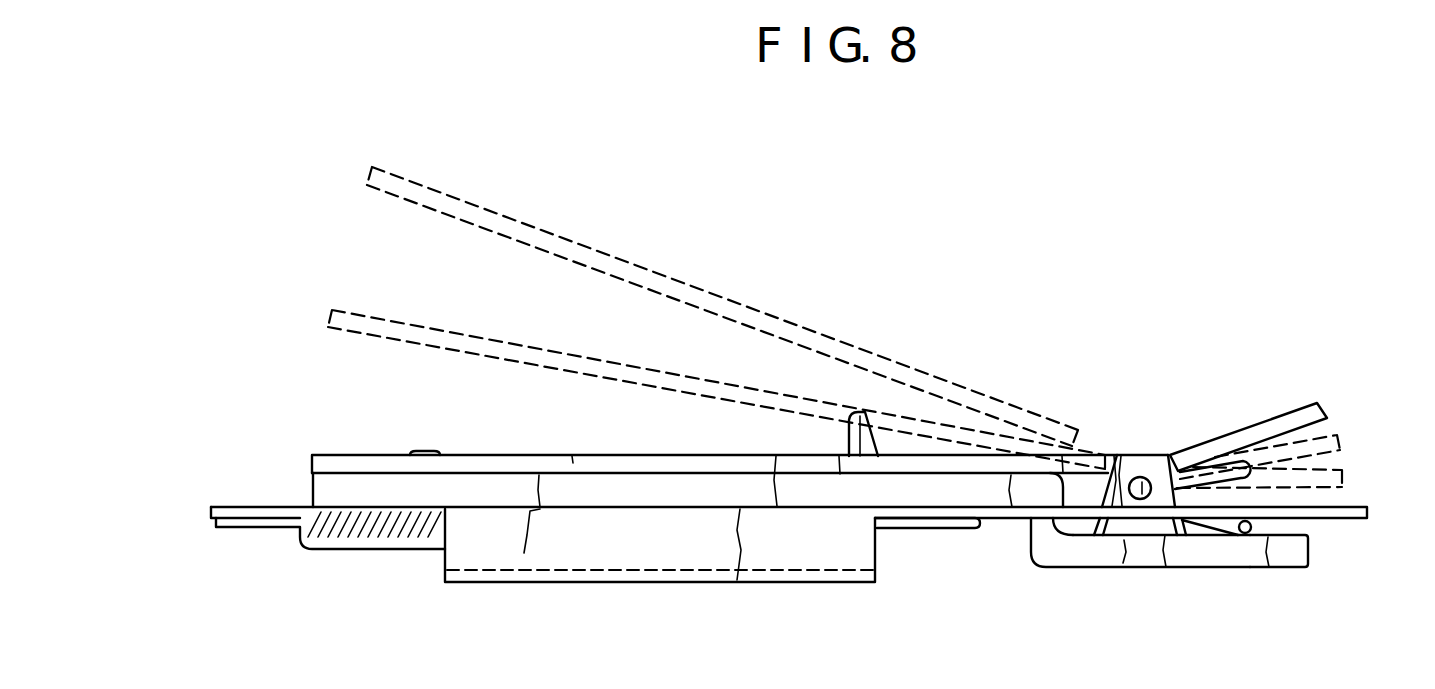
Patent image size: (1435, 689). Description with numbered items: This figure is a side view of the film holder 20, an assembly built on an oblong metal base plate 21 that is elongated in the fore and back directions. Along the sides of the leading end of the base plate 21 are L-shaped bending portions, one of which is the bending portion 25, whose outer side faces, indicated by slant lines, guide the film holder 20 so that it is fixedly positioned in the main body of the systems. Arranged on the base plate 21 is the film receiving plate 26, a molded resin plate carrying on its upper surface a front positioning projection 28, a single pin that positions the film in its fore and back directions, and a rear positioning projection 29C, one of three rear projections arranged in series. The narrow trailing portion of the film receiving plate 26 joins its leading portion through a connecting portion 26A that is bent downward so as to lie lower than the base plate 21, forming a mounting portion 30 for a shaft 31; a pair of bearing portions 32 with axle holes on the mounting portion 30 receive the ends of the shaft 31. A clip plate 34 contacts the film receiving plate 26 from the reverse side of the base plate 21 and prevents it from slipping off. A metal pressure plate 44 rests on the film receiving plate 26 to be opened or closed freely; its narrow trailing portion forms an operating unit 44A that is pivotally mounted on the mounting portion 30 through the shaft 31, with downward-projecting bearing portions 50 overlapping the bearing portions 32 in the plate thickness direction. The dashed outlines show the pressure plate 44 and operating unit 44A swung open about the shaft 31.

The film holder 20 is at (774, 222).
The base plate 21 is at (1370, 510).
The bending portion 25 is at (797, 572).
The film receiving plate 26 is at (1062, 567).
The connecting portion 26A is at (1048, 537).
The front positioning projection 28 is at (438, 452).
The rear positioning projection 29C is at (848, 439).
The mounting portion 30 is at (1252, 551).
The shaft 31 is at (1148, 480).
The bearing portion 32 is at (1165, 528).
The clip plate 34 is at (938, 528).
The pressure plate 44 is at (952, 456).
The operating unit 44A is at (1318, 403).
The bearing portion 50 is at (1135, 460).